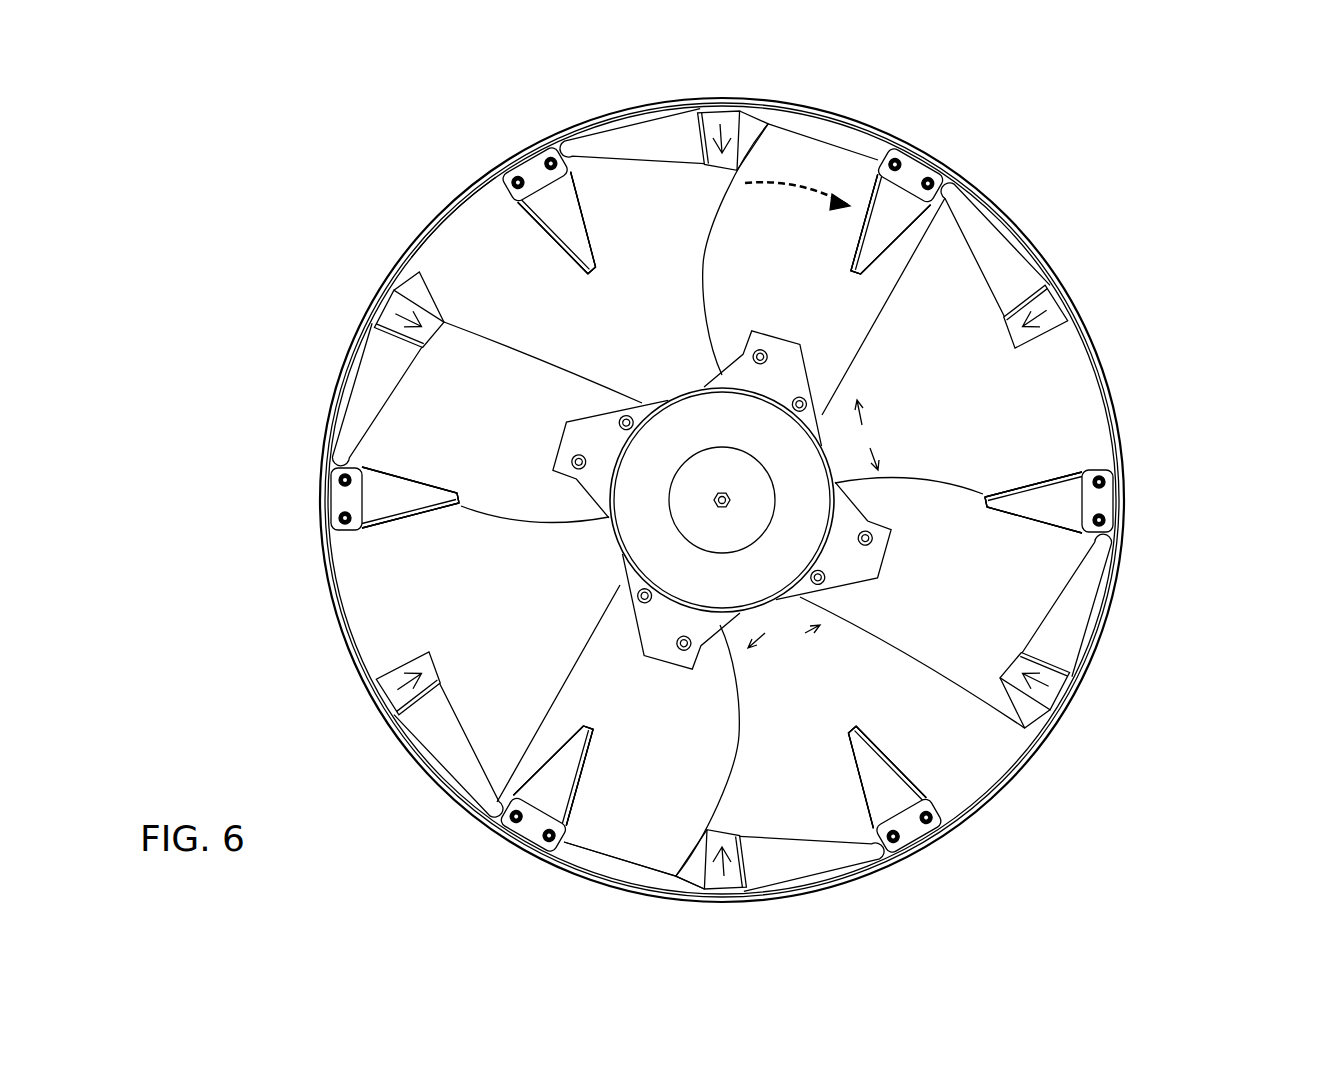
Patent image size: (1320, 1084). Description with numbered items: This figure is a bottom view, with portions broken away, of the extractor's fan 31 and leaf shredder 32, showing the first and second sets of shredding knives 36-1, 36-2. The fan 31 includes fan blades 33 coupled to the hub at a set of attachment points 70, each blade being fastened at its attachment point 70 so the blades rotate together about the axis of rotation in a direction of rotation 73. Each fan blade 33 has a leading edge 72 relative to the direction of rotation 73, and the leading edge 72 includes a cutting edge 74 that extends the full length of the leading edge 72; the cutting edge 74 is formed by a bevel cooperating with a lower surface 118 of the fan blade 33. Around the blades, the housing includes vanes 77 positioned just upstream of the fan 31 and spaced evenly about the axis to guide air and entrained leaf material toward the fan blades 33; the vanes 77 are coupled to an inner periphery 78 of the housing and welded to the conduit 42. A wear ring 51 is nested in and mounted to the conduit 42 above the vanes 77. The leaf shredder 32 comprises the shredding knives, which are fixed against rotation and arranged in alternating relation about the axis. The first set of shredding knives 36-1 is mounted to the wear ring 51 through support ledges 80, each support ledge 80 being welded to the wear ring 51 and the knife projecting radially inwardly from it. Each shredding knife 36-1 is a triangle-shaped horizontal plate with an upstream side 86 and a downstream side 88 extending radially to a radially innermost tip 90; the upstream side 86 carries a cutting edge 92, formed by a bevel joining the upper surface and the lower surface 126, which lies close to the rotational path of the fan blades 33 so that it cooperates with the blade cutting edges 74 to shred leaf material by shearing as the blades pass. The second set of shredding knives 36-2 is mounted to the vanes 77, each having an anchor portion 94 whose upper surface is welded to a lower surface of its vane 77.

The fan 31 is at (650, 880).
The leaf shredder 32 is at (730, 501).
The fan blades 33 is at (813, 524).
The first set of shredding knives 36-1 is at (730, 499).
The second set of shredding knives 36-2 is at (724, 499).
The conduit 42 is at (443, 793).
The wear ring 51 is at (450, 222).
The attachment points 70 is at (785, 390).
The leading edge 72 is at (718, 542).
The direction of rotation 73 is at (805, 205).
The cutting edge 74 is at (718, 542).
The vanes 77 is at (628, 140).
The inner periphery 78 is at (600, 870).
The support ledges 80 is at (540, 168).
The upstream side 86 is at (855, 205).
The downstream side 88 is at (600, 210).
The radially innermost tip 90 is at (592, 280).
The cutting edge 92 is at (822, 260).
The anchor portion 94 is at (705, 188).
The lower surface 118 is at (705, 265).
The lower surface 126 is at (588, 253).